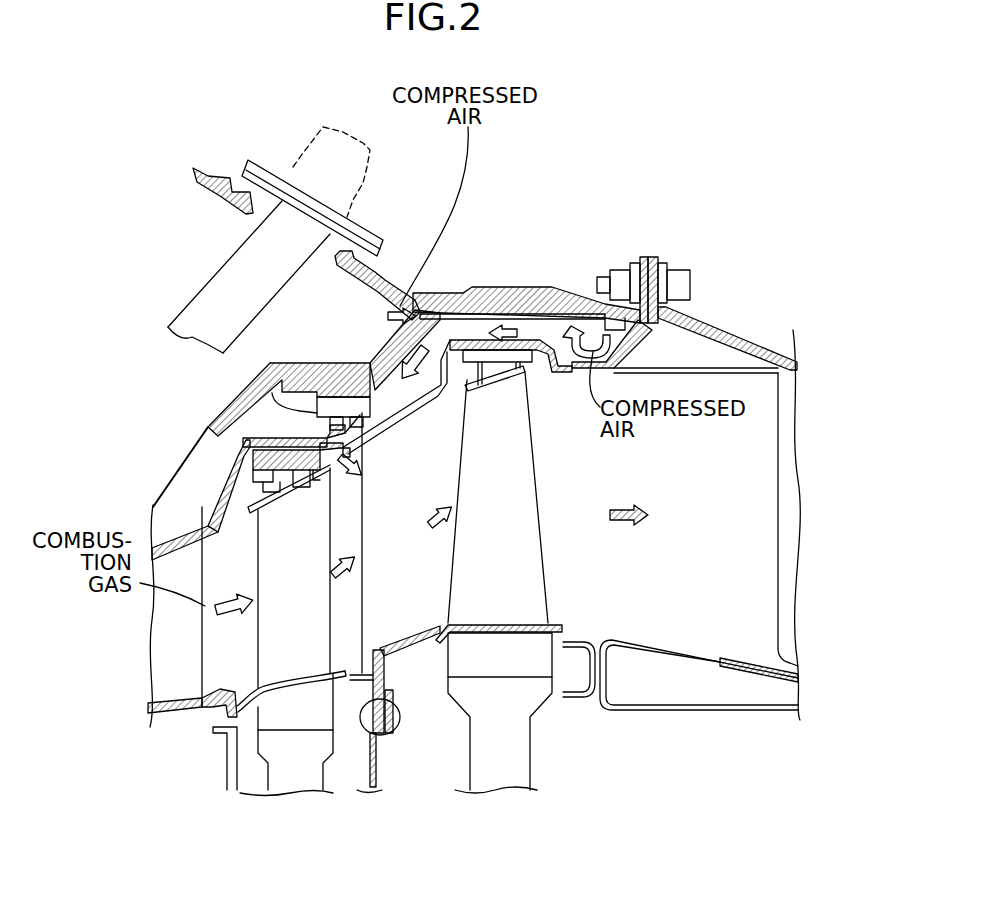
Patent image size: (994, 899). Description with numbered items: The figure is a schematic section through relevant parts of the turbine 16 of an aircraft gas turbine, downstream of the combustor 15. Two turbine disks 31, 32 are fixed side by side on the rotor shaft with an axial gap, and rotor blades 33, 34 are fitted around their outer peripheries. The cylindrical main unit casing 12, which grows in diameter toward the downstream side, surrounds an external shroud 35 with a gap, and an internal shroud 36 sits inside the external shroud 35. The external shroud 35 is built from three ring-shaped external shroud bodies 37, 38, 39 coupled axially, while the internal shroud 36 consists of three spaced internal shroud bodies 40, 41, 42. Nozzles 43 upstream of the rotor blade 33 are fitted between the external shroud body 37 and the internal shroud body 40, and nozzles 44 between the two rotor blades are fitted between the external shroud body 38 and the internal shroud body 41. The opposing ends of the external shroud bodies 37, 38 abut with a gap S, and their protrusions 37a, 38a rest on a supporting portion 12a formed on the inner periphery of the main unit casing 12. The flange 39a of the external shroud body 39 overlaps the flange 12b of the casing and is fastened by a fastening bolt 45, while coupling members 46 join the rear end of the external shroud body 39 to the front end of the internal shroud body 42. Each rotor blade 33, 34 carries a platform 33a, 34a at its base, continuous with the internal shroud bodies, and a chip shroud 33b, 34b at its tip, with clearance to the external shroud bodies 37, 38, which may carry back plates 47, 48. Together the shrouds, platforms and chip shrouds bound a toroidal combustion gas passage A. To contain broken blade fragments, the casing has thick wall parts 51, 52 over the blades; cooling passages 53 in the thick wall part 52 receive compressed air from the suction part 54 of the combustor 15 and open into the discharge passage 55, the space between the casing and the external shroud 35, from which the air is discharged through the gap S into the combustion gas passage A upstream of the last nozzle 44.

The main unit casing 12 is at (322, 352).
The supporting portion 12a is at (292, 393).
The flange 12b is at (642, 257).
The combustor 15 is at (146, 218).
The turbine 16 is at (460, 275).
The turbine disk 31 is at (298, 777).
The turbine disk 32 is at (505, 778).
The rotor blade 33 is at (163, 685).
The platform 33a is at (312, 673).
The chip shroud 33b is at (213, 505).
The rotor blade 34 is at (523, 546).
The platform 34a is at (525, 615).
The chip shroud 34b is at (528, 363).
The external shroud 35 is at (153, 503).
The internal shroud 36 is at (168, 724).
The external shroud body 37 is at (190, 542).
The protrusion 37a is at (296, 407).
The external shroud body 38 is at (432, 350).
The protrusion 38a is at (380, 372).
The external shroud body 39 is at (690, 324).
The flange 39a is at (653, 257).
The internal shroud body 40 is at (204, 713).
The internal shroud body 41 is at (425, 640).
The internal shroud body 42 is at (793, 663).
The nozzle 43 is at (163, 623).
The nozzle 44 is at (417, 440).
The fastening bolt 45 is at (692, 275).
The coupling member 46 is at (792, 531).
The back plate 47 is at (258, 425).
The back plate 48 is at (522, 349).
The thick wall part 51 is at (332, 397).
The thick wall part 52 is at (507, 307).
The cooling passage 53 is at (550, 288).
The suction part 54 is at (398, 306).
The discharge passage 55 is at (404, 405).
The gap S is at (330, 467).
The combustion gas passage A is at (619, 499).